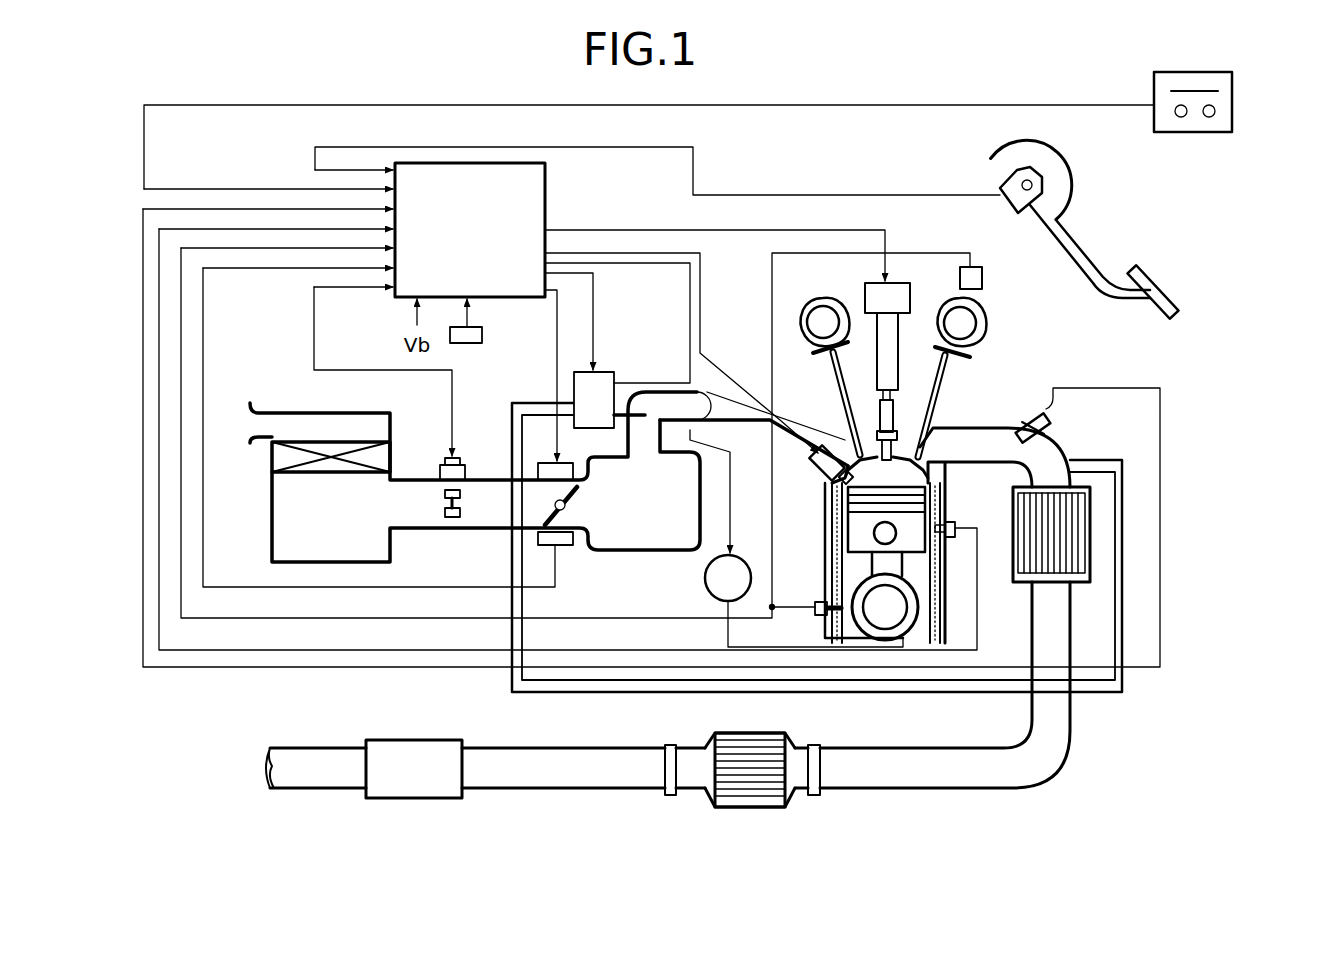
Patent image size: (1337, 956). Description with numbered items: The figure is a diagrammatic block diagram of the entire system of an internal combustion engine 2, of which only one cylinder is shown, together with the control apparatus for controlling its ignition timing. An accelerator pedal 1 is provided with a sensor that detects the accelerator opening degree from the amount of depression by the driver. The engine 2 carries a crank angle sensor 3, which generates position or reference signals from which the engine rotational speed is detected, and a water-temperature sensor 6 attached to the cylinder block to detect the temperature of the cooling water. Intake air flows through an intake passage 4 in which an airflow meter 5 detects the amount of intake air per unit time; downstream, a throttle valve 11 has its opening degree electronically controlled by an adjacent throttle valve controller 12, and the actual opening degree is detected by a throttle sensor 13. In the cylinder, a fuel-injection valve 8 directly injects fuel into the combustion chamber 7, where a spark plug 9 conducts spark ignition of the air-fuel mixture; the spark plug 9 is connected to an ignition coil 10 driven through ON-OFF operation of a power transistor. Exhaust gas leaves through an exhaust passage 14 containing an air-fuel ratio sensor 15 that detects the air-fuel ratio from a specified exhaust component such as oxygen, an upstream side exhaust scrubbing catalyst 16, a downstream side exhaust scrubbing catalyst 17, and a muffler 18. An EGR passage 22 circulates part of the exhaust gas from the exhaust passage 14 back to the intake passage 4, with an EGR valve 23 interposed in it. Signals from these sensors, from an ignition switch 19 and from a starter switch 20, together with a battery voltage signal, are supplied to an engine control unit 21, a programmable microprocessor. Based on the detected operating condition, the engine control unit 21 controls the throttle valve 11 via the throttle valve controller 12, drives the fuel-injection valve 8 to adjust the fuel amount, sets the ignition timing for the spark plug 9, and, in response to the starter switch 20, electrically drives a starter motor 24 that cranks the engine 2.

The accelerator pedal 1 is at (997, 187).
The internal combustion engine 2 is at (823, 527).
The crank angle sensor 3 is at (815, 605).
The intake passage 4 is at (437, 530).
The airflow meter 5 is at (445, 505).
The water-temperature sensor 6 is at (955, 522).
The combustion chamber 7 is at (912, 483).
The fuel-injection valve 8 is at (826, 470).
The spark plug 9 is at (888, 437).
The ignition coil 10 is at (891, 340).
The throttle valve 11 is at (577, 493).
The throttle valve controller 12 is at (550, 478).
The throttle sensor 13 is at (565, 548).
The exhaust passage 14 is at (920, 790).
The air-fuel ratio sensor 15 is at (1037, 410).
The upstream side exhaust scrubbing catalyst 16 is at (1013, 565).
The downstream side exhaust scrubbing catalyst 17 is at (752, 808).
The muffler 18 is at (412, 800).
The ignition switch 19 is at (484, 337).
The starter switch 20 is at (1233, 100).
The engine control unit 21 is at (395, 297).
The EGR passage 22 is at (1125, 478).
The EGR valve 23 is at (600, 373).
The starter motor 24 is at (735, 556).